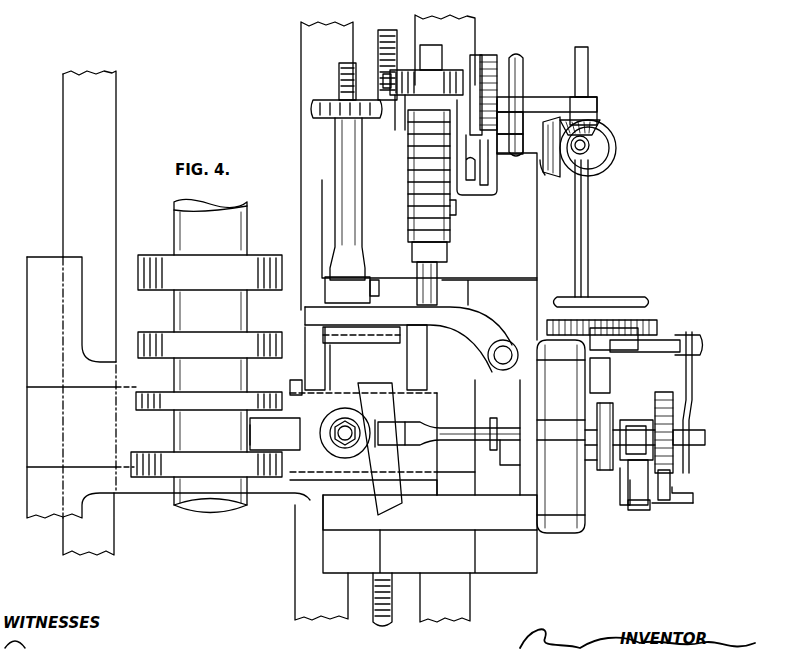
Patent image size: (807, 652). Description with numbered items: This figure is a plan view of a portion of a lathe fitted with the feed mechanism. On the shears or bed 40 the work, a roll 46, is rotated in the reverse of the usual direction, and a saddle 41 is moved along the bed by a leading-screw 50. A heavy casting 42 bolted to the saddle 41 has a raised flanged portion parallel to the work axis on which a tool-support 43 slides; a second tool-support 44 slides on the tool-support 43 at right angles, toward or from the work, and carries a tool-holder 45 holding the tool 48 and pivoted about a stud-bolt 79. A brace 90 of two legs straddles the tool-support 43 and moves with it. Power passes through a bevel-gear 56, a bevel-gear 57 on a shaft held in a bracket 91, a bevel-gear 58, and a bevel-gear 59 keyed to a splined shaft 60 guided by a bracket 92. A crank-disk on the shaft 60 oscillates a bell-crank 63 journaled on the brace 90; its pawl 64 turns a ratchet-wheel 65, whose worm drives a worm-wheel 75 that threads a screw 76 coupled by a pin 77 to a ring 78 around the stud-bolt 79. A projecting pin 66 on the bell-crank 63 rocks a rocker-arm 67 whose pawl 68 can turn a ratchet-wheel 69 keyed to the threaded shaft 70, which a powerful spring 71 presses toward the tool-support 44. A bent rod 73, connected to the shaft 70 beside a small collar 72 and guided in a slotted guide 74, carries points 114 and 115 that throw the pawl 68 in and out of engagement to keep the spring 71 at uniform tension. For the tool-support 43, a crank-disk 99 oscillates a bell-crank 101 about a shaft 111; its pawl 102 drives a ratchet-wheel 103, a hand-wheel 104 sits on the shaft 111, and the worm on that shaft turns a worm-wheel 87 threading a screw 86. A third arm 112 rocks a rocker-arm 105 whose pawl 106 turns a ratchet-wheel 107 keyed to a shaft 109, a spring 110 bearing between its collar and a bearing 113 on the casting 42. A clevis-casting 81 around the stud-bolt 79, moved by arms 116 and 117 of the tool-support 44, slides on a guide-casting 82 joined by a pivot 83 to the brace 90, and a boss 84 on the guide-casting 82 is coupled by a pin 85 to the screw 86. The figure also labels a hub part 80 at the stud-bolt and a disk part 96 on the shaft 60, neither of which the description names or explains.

The shears or bed 40 is at (269, 318).
The saddle 41 is at (168, 387).
The heavy casting 42 is at (421, 363).
The tool-support 43 is at (300, 483).
The tool-support 44 is at (363, 444).
The tool-holder 45 is at (326, 449).
The roll 46 is at (206, 355).
The tool 48 is at (258, 436).
The leading-screw 50 is at (372, 632).
The bevel-gear 56 is at (610, 152).
The bevel-gear 57 is at (545, 175).
The bevel-gear 58 is at (552, 172).
The bevel-gear 59 is at (603, 125).
The shaft 60 is at (588, 68).
The bell-crank 63 is at (648, 352).
The pawl 64 is at (602, 322).
The ratchet-wheel 65 is at (636, 333).
The projecting pin 66 is at (695, 345).
The rocker-arm 67 is at (692, 386).
The pawl 68 is at (665, 500).
The ratchet-wheel 69 is at (661, 423).
The shaft 70 is at (705, 436).
The spring 71 is at (613, 418).
The small collar 72 is at (493, 424).
The rod 73 is at (510, 468).
The slotted guide 74 is at (638, 514).
The worm-wheel 75 is at (605, 470).
The screw 76 is at (430, 428).
The pin 77 is at (380, 425).
The ring 78 is at (390, 433).
The stud-bolt 79 is at (350, 433).
The hub 80 is at (330, 428).
The clevis-casting 81 is at (344, 367).
The guide-casting 82 is at (408, 339).
The pivot 83 is at (505, 345).
The boss 84 is at (347, 290).
The pin 85 is at (378, 288).
The screw 86 is at (325, 228).
The worm-wheel 87 is at (313, 108).
The brace 90 is at (454, 436).
The bracket 91 is at (519, 144).
The bracket 92 is at (533, 100).
The disc 96 is at (648, 299).
The crank-disk 99 is at (492, 195).
The bell-crank 101 is at (466, 205).
The pawl 102 is at (522, 123).
The ratchet-wheel 103 is at (497, 65).
The hand-wheel 104 is at (523, 62).
The rocker-arm 105 is at (422, 66).
The pawl 106 is at (386, 80).
The ratchet-wheel 107 is at (426, 77).
The shaft 109 is at (437, 270).
The spring 110 is at (447, 224).
The shaft 111 is at (392, 132).
The third arm 112 is at (478, 55).
The bearing 113 is at (429, 176).
The point 114 is at (693, 489).
The point 115 is at (637, 482).
The arm 116 is at (414, 357).
The arm 117 is at (301, 380).